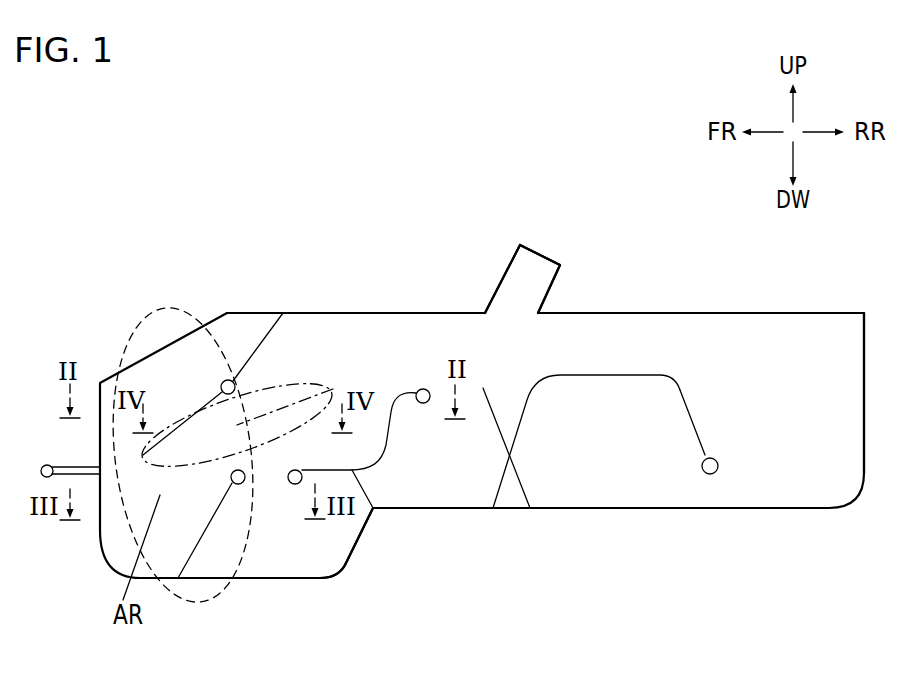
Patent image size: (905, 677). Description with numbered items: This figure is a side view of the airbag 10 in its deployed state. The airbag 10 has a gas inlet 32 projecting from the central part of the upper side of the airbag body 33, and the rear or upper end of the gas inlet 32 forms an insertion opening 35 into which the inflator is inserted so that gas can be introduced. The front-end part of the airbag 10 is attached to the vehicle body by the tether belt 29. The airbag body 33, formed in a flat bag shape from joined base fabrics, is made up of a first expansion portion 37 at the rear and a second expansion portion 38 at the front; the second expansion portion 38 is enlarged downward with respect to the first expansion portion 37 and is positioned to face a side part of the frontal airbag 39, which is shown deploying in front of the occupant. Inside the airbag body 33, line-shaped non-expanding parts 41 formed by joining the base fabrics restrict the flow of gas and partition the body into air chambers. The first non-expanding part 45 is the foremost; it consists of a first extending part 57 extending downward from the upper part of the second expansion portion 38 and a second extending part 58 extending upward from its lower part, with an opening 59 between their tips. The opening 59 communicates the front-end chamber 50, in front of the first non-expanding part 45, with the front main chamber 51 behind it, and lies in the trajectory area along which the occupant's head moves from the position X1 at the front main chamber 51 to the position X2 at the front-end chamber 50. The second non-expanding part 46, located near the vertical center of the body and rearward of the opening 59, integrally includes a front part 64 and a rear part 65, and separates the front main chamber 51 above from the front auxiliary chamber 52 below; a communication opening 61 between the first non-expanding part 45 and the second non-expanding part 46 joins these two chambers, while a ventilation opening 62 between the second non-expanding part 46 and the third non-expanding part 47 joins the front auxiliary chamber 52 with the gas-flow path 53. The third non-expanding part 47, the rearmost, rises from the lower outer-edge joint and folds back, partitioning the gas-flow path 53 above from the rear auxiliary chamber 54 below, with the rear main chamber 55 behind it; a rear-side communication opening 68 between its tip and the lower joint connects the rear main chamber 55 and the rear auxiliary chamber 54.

The airbag 10 is at (674, 236).
The tether belt 29 is at (60, 465).
The gas inlet 32 is at (513, 261).
The airbag body 33 is at (758, 313).
The insertion opening 35 is at (549, 262).
The first expansion portion 37 is at (647, 508).
The second expansion portion 38 is at (272, 580).
The frontal airbag 39 is at (157, 307).
The non-expanding parts 41 is at (577, 360).
The first non-expanding part 45 is at (263, 357).
The second non-expanding part 46 is at (414, 388).
The third non-expanding part 47 is at (673, 380).
The front-end chamber 50 is at (137, 378).
The front main chamber 51 is at (383, 340).
The front auxiliary chamber 52 is at (333, 553).
The gas-flow path 53 is at (633, 330).
The rear auxiliary chamber 54 is at (590, 468).
The rear main chamber 55 is at (807, 467).
The first extending part 57 is at (262, 347).
The second extending part 58 is at (181, 580).
The opening 59 is at (238, 427).
The communication opening 61 is at (306, 580).
The ventilation opening 62 is at (530, 508).
The front part 64 is at (370, 508).
The rear part 65 is at (393, 455).
The rear-side communication opening 68 is at (709, 492).
The position X1 is at (333, 389).
The position X2 is at (143, 455).